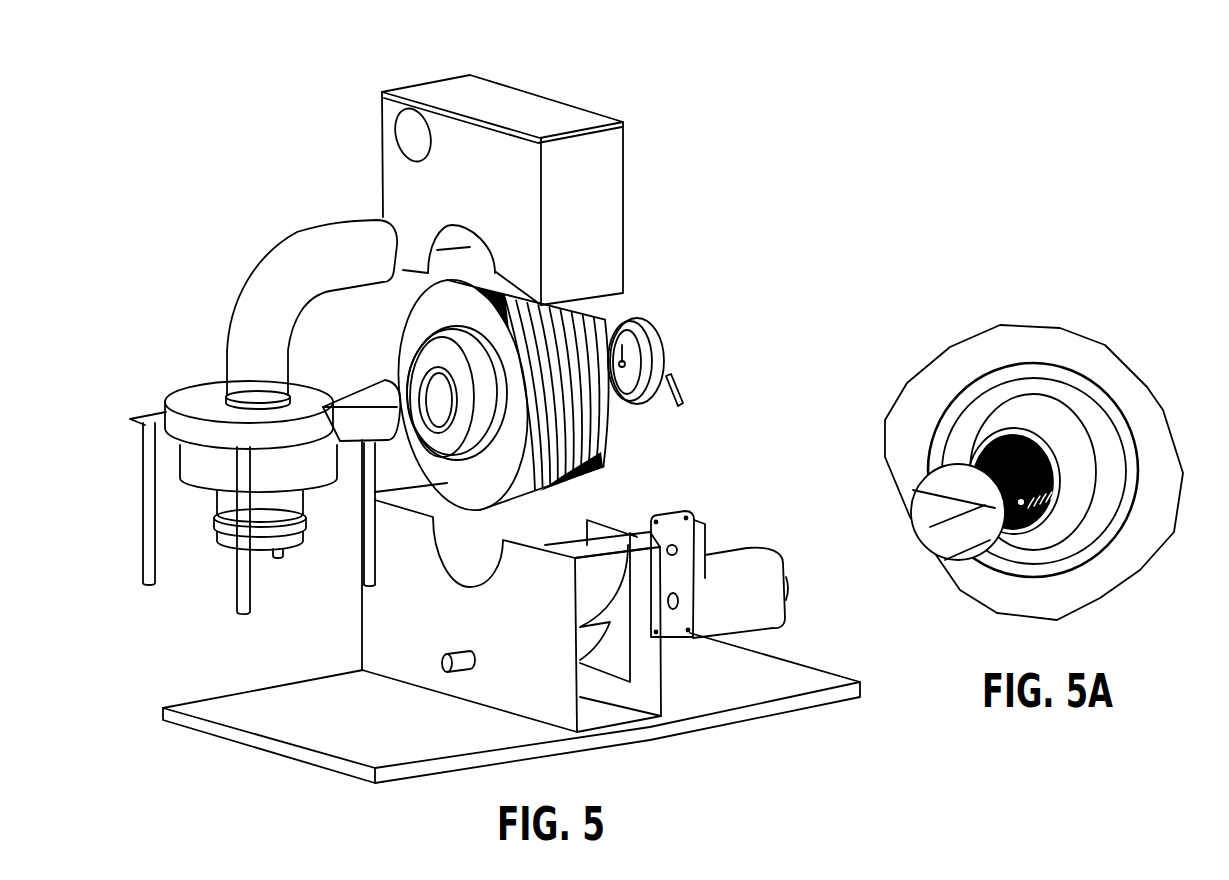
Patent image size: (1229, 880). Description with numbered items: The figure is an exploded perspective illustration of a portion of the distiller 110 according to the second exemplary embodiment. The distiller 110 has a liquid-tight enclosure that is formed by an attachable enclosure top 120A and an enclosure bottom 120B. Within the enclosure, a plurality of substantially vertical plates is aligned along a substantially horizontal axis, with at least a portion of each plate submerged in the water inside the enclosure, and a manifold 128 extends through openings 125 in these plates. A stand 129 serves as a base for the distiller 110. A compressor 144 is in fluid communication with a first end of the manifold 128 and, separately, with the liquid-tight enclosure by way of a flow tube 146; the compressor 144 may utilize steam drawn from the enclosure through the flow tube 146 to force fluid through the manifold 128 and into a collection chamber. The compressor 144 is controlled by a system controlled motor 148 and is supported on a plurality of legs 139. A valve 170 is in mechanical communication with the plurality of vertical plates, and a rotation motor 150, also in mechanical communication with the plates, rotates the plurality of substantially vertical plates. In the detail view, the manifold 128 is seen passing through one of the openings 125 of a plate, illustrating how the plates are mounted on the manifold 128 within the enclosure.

In FIG. 5, the distiller 110 is at (693, 208).
In FIG. 5, the enclosure top 120A is at (520, 110).
In FIG. 5, the enclosure bottom 120B is at (667, 677).
In FIG. 5A, the openings 125 is at (990, 462).
In FIG. 5A, the manifold 128 is at (1023, 510).
In FIG. 5, the stand 129 is at (258, 738).
In FIG. 5, the legs 139 is at (232, 587).
In FIG. 5, the compressor 144 is at (205, 418).
In FIG. 5, the flow tube 146 is at (317, 232).
In FIG. 5, the system controlled motor 148 is at (203, 493).
In FIG. 5, the rotation motor 150 is at (709, 532).
In FIG. 5, the valve 170 is at (663, 333).